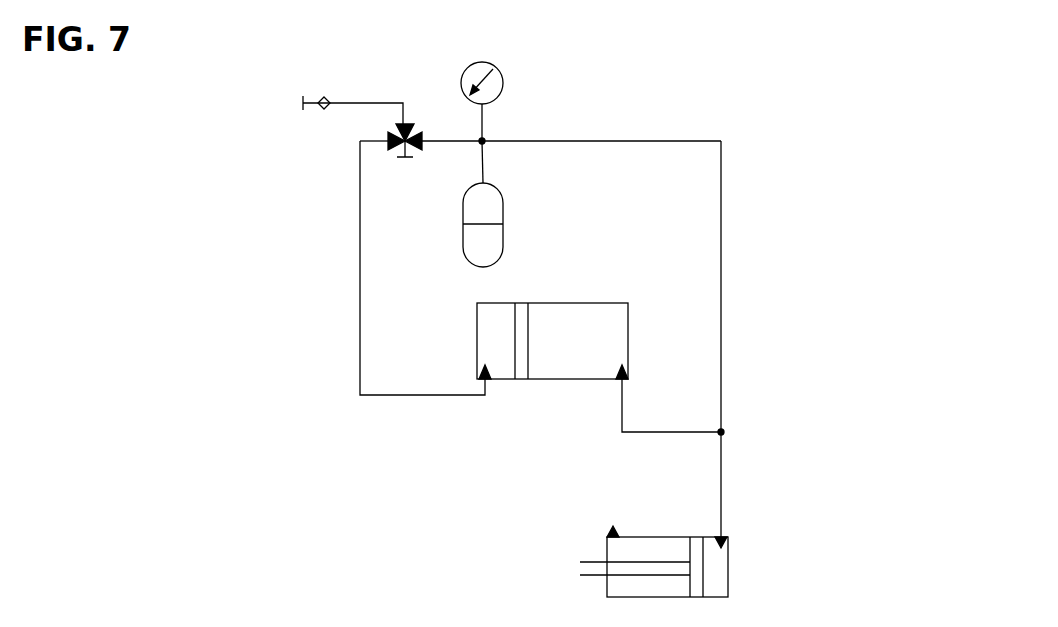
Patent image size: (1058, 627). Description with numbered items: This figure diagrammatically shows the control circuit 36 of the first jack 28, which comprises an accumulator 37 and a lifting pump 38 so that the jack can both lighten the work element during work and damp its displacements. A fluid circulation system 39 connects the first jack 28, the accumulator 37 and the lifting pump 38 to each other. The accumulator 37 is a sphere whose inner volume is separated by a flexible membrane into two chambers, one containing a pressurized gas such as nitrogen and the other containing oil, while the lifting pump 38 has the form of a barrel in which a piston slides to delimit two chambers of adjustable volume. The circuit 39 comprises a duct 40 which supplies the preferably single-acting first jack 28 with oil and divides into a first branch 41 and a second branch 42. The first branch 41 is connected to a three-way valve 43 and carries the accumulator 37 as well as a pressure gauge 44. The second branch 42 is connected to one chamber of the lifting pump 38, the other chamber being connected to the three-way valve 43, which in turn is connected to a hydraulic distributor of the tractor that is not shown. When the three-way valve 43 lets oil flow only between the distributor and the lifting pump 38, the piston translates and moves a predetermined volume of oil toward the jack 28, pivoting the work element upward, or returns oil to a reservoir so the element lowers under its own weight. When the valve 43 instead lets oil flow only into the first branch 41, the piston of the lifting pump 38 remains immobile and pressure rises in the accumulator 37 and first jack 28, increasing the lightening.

The first jack 28 is at (715, 585).
The control circuit 36 is at (265, 418).
The accumulator 37 is at (490, 246).
The lifting pump 38 is at (598, 325).
The fluid circulation system 39 is at (722, 146).
The duct 40 is at (723, 470).
The first branch 41 is at (722, 292).
The second branch 42 is at (618, 423).
The three-way valve 43 is at (411, 126).
The pressure gauge 44 is at (503, 80).